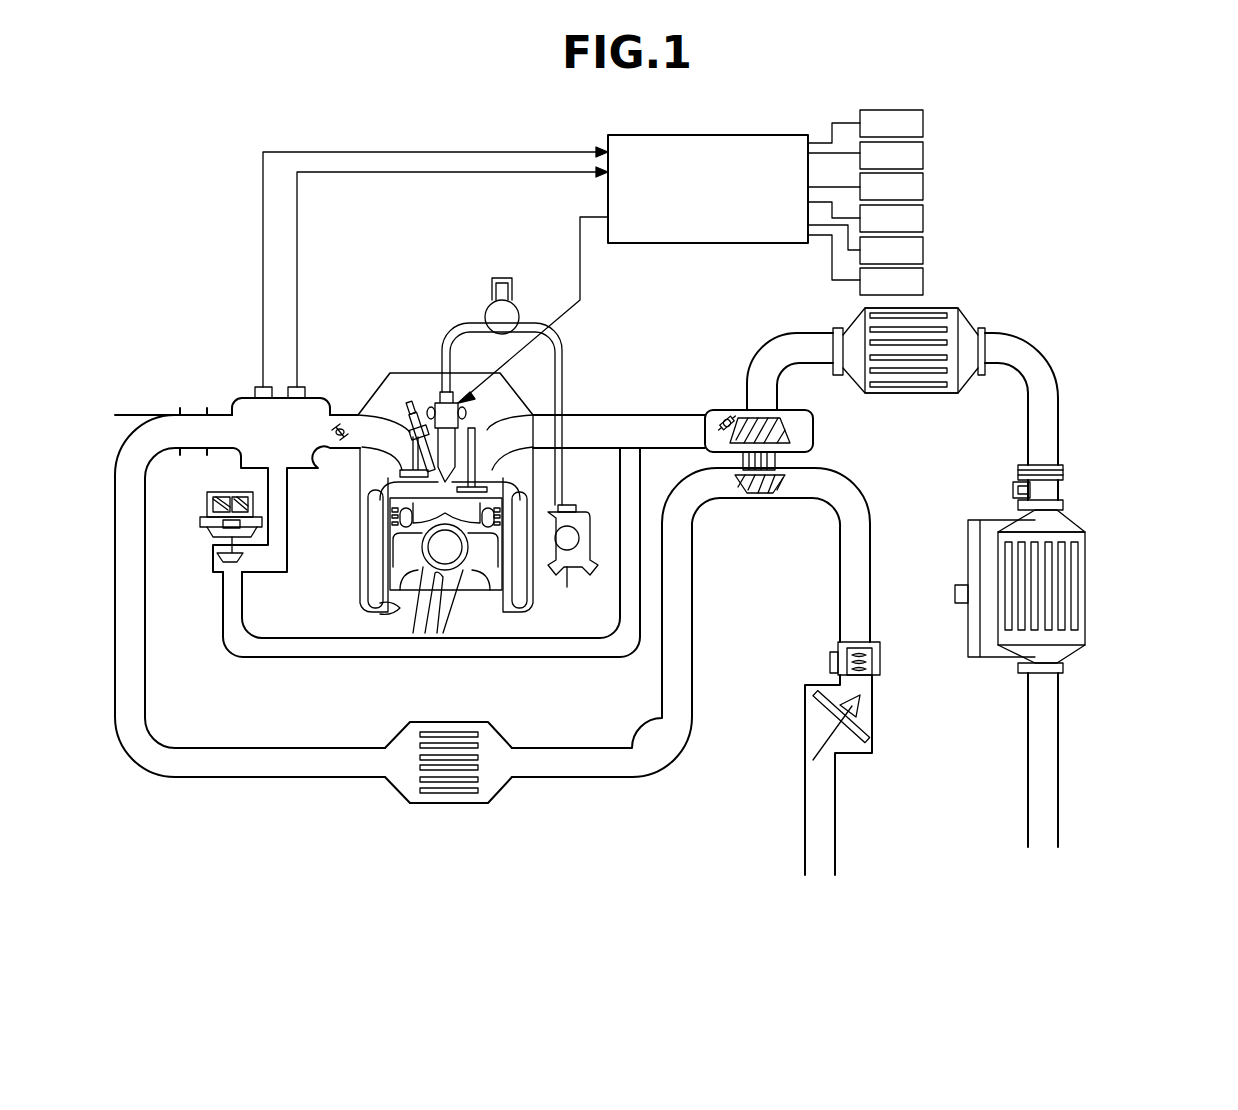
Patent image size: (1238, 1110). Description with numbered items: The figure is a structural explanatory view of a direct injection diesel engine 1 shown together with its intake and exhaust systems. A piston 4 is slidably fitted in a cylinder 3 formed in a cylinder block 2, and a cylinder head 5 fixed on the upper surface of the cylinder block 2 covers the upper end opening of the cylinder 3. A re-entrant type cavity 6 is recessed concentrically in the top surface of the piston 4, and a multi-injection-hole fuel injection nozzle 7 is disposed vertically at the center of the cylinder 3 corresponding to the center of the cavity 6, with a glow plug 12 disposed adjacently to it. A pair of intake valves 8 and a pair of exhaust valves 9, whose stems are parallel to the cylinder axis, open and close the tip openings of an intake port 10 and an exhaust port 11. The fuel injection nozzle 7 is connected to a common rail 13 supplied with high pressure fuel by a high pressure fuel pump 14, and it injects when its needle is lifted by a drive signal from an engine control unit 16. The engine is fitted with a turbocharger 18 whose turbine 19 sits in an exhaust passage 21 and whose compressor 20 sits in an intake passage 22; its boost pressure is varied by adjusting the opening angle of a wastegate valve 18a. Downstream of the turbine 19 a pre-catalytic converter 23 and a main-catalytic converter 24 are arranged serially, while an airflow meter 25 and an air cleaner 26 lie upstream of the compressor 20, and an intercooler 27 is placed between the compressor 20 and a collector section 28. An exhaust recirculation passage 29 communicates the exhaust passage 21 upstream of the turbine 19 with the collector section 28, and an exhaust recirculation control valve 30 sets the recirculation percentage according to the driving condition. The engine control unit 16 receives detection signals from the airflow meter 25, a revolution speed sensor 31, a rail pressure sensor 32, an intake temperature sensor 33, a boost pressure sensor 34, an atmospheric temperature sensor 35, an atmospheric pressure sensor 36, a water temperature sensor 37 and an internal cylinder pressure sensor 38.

The direct injection diesel engine 1 is at (226, 348).
The cylinder block 2 is at (377, 550).
The cylinder 3 is at (400, 607).
The piston 4 is at (430, 503).
The cylinder head 5 is at (490, 400).
The re-entrant type cavity 6 is at (410, 470).
The fuel injection nozzle 7 is at (440, 400).
The intake valves 8 is at (415, 450).
The exhaust valves 9 is at (473, 468).
The intake port 10 is at (372, 432).
The exhaust port 11 is at (562, 432).
The glow plug 12 is at (413, 430).
The common rail 13 is at (440, 398).
The high pressure fuel pump 14 is at (578, 530).
The engine control unit 16 is at (705, 225).
The turbocharger 18 is at (820, 456).
The wastegate valve 18a is at (690, 416).
The turbine 19 is at (745, 418).
The compressor 20 is at (770, 493).
The exhaust passage 21 is at (672, 416).
The intake passage 22 is at (218, 765).
The pre-catalytic converter 23 is at (917, 335).
The main-catalytic converter 24 is at (1060, 590).
The airflow meter 25 is at (882, 668).
The air cleaner 26 is at (870, 725).
The intercooler 27 is at (420, 770).
The collector section 28 is at (262, 413).
The exhaust recirculation passage 29 is at (232, 608).
The exhaust recirculation control valve 30 is at (218, 567).
The revolution speed sensor 31 is at (923, 123).
The rail pressure sensor 32 is at (923, 154).
The intake temperature sensor 33 is at (263, 385).
The boost pressure sensor 34 is at (297, 385).
The atmospheric temperature sensor 35 is at (923, 186).
The atmospheric pressure sensor 36 is at (923, 217).
The water temperature sensor 37 is at (923, 249).
The internal cylinder pressure sensor 38 is at (923, 281).